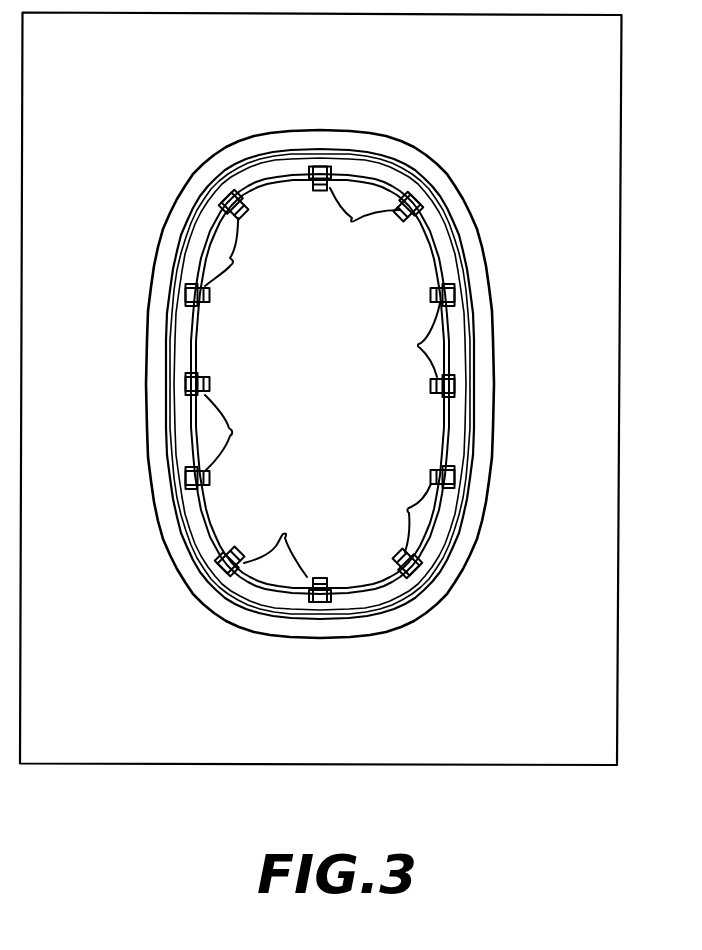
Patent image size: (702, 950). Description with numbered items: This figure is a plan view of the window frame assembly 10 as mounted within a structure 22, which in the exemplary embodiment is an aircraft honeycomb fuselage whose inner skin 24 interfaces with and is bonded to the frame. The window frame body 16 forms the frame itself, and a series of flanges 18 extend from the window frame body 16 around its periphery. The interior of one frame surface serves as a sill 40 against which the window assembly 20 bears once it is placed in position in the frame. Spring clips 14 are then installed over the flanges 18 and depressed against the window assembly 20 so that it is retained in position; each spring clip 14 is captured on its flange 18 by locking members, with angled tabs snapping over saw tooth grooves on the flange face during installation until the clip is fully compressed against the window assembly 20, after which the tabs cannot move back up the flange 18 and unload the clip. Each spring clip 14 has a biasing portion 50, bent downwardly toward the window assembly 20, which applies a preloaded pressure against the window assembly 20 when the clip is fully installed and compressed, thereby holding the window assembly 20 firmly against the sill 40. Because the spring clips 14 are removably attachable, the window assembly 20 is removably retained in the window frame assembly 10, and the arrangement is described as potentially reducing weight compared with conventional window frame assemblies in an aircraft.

The window frame assembly 10 is at (151, 168).
The spring clips 14 is at (301, 198).
The window frame body 16 is at (179, 227).
The flanges 18 is at (330, 167).
The window assembly 20 is at (319, 375).
The structure 22 is at (586, 136).
The inner skin 24 is at (560, 326).
The sill 40 is at (366, 182).
The biasing portion 50 is at (231, 262).